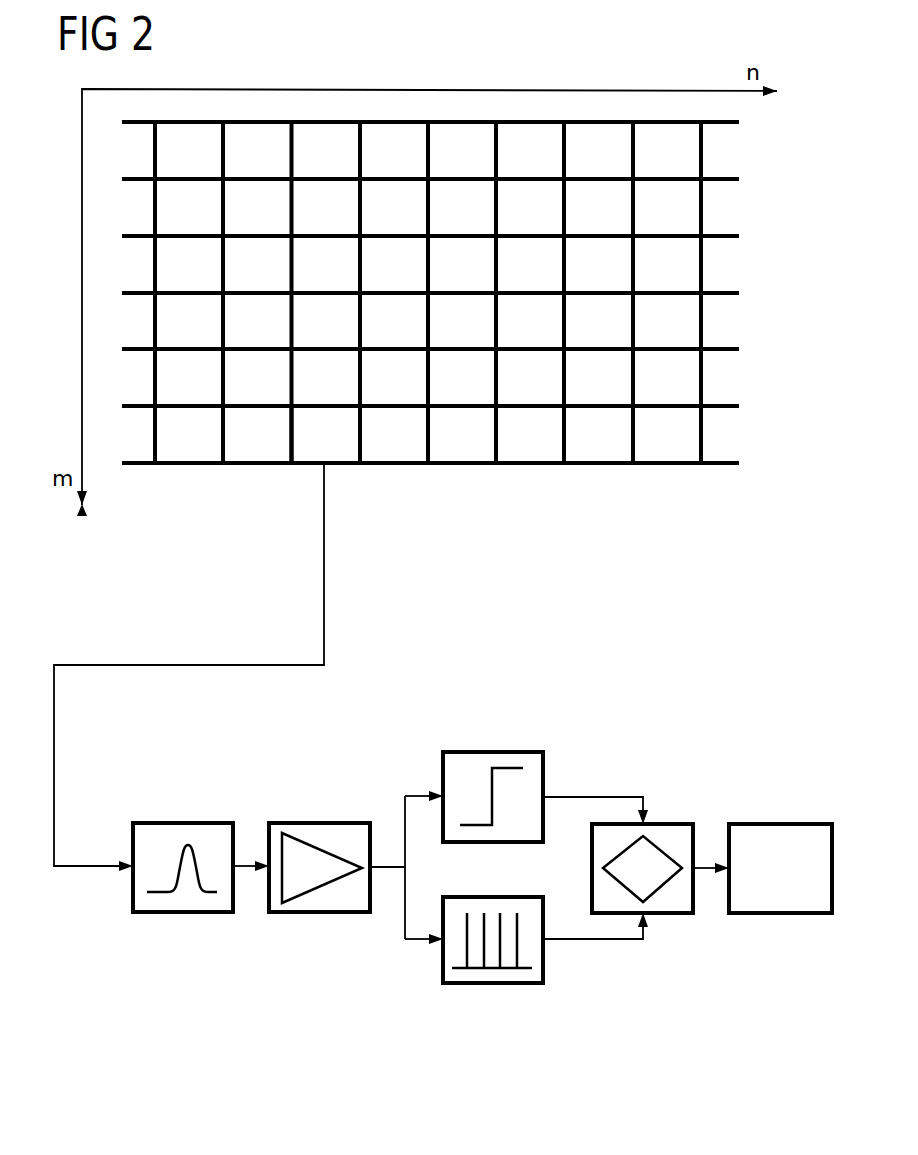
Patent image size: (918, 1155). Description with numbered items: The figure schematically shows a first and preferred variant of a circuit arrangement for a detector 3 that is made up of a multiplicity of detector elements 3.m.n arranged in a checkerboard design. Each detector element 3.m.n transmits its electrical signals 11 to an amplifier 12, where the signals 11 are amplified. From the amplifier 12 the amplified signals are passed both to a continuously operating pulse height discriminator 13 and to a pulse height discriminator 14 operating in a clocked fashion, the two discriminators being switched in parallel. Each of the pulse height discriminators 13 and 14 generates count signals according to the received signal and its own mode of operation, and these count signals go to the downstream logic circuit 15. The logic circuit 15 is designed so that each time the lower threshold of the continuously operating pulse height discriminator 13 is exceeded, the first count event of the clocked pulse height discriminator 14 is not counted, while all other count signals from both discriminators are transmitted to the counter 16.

The detector 3 is at (648, 506).
The detector element 3.m.n is at (340, 450).
The signals 11 is at (178, 912).
The amplifier 12 is at (317, 912).
The continuously operating pulse height discriminator 13 is at (493, 752).
The clocked pulse height discriminator 14 is at (493, 983).
The logic circuit 15 is at (668, 913).
The counter 16 is at (782, 913).